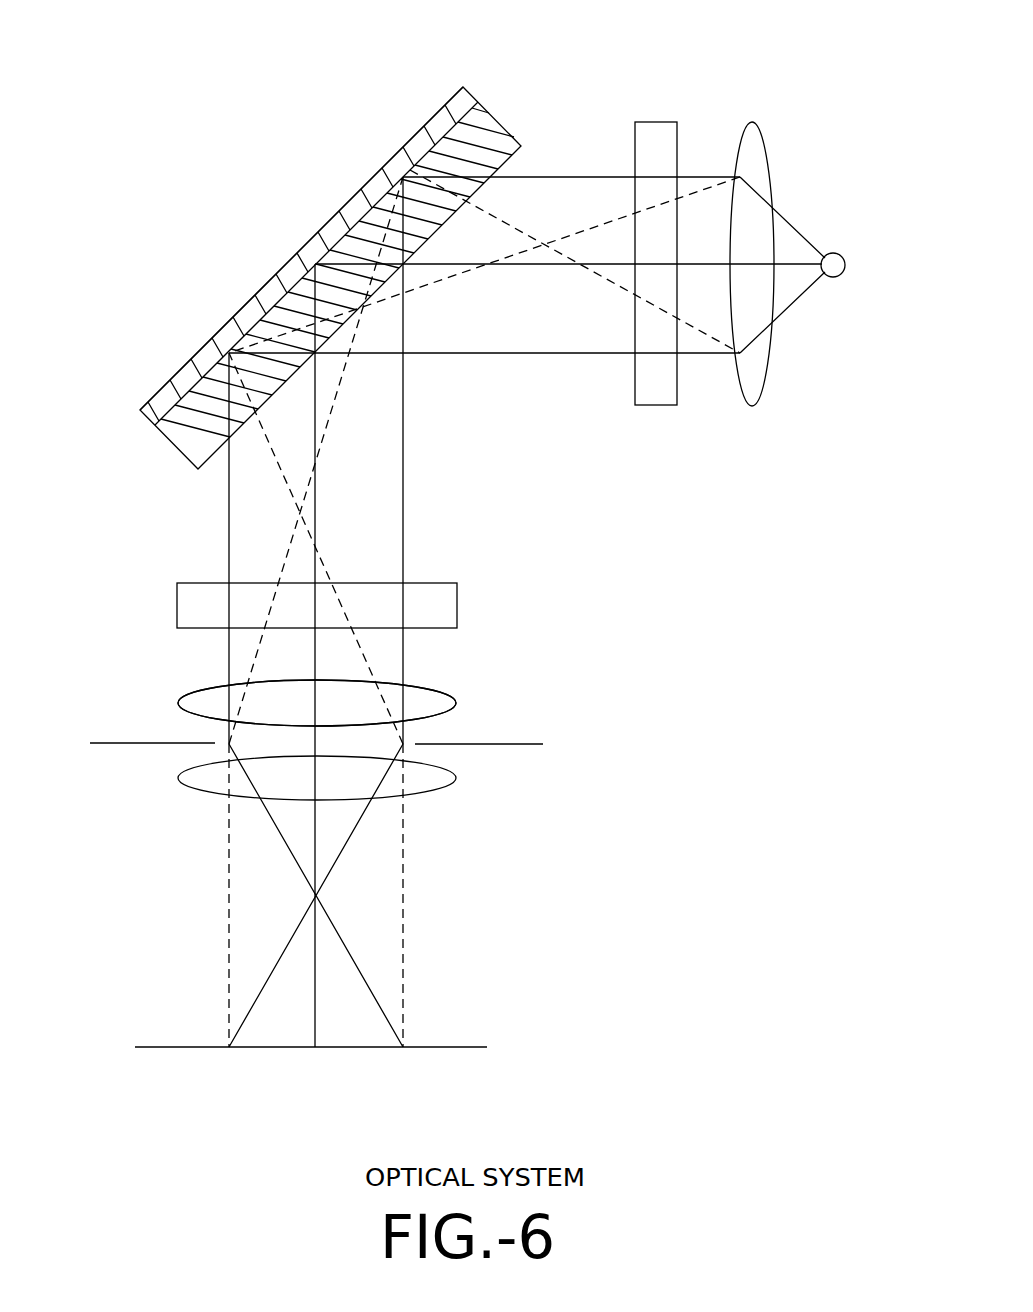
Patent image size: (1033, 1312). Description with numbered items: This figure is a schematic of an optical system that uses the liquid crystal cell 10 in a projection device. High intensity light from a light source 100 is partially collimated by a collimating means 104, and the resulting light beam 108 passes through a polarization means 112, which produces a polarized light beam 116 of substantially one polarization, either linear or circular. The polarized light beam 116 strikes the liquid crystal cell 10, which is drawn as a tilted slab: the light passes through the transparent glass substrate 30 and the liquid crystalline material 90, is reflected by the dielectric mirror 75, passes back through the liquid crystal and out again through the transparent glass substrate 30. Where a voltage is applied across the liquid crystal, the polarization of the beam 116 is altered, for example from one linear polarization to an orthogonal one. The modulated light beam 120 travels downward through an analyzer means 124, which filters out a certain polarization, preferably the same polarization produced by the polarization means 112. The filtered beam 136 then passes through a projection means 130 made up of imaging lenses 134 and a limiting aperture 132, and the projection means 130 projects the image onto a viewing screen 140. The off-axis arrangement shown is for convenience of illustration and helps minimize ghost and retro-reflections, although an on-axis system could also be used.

The liquid crystal cell 10 is at (570, 82).
The transparent glass substrate 30 is at (175, 400).
The dielectric mirror 75 is at (275, 308).
The liquid crystalline material 90 is at (350, 200).
The light source 100 is at (833, 277).
The collimating means 104 is at (750, 407).
The light beam 108 is at (698, 356).
The polarization means 112 is at (653, 402).
The polarized light beam 116 is at (502, 353).
The modulated light beam 120 is at (405, 507).
The analyzer means 124 is at (448, 610).
The projection means 130 is at (508, 846).
The limiting aperture 132 is at (500, 745).
The imaging lenses 134 is at (178, 703).
The filtered beam 136 is at (403, 667).
The viewing screen 140 is at (458, 1047).